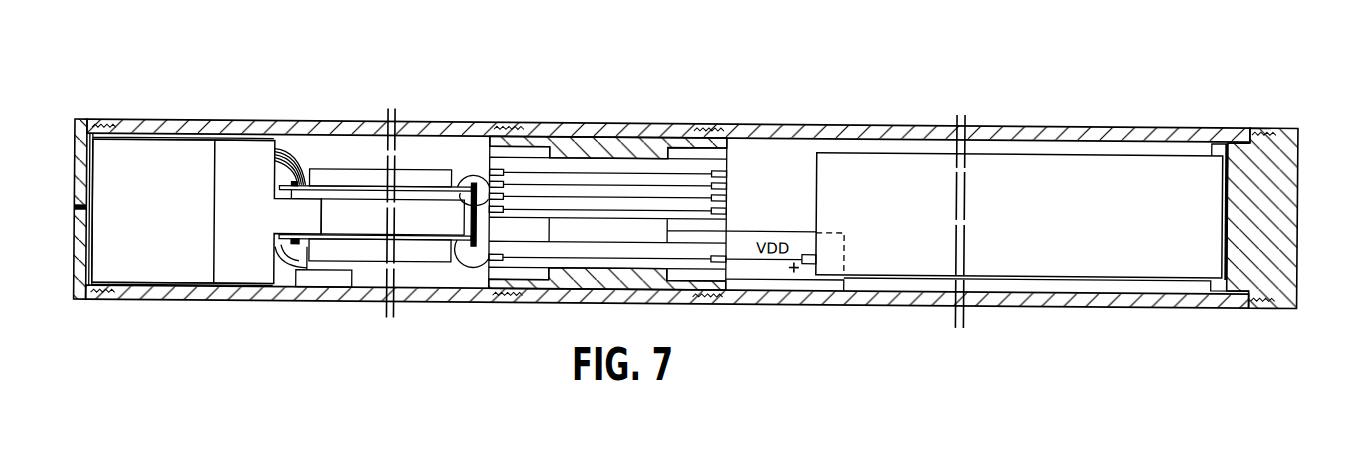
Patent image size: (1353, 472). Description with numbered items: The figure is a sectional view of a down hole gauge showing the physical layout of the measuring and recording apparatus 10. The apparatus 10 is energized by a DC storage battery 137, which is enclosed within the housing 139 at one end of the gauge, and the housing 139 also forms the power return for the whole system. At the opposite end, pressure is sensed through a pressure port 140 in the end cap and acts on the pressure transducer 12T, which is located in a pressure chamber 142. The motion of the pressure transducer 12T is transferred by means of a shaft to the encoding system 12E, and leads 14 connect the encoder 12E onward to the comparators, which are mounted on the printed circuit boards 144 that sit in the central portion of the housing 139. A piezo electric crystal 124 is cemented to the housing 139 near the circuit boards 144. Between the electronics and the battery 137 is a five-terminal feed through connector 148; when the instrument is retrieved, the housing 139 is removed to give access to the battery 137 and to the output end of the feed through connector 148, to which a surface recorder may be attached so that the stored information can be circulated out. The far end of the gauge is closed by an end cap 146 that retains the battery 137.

The measuring and recording apparatus 10 is at (903, 93).
The pressure transducer 12T is at (183, 150).
The encoding system 12E is at (240, 146).
The lead wires 14 is at (302, 176).
The piezo electric crystal 124 is at (326, 277).
The DC storage battery 137 is at (1043, 155).
The housing 139 is at (765, 122).
The pressure port 140 is at (86, 207).
The pressure chamber 142 is at (187, 283).
The printed circuit boards 144 is at (425, 225).
The rear end cap 146 is at (1299, 134).
The five-terminal feed through connector 148 is at (622, 156).